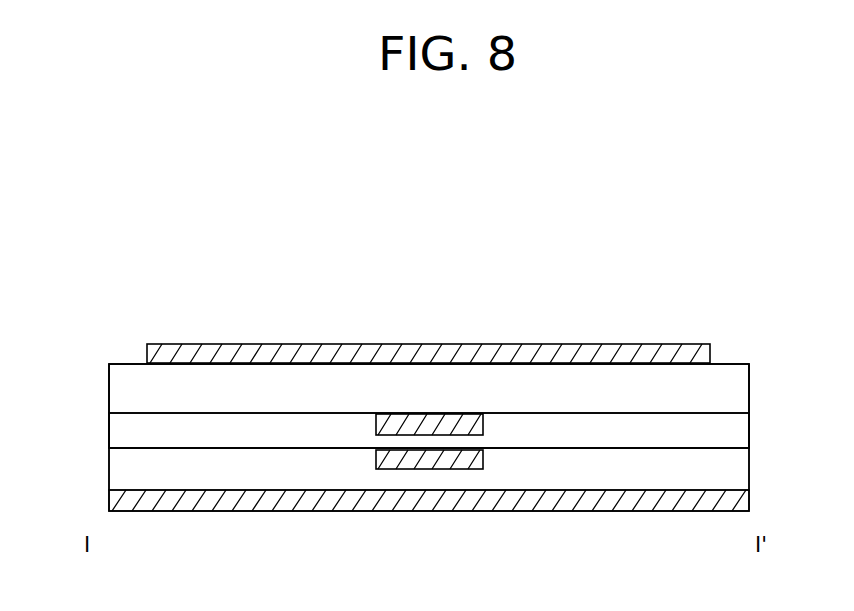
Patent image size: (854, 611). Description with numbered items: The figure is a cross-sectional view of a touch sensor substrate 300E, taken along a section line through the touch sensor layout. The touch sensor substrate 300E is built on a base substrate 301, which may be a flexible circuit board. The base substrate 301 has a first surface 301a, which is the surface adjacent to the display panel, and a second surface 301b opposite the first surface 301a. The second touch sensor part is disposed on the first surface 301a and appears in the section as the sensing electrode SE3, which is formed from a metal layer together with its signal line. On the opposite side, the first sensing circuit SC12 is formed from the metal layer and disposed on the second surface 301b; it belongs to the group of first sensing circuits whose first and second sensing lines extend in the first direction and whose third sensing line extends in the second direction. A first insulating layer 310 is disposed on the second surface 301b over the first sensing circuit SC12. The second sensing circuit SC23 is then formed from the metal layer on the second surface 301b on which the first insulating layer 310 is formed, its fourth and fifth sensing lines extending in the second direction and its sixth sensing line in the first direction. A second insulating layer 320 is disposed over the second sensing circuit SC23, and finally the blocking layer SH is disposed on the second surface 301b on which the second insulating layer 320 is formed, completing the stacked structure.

The touch sensor substrate 300E is at (508, 282).
The base substrate 301 is at (113, 384).
The first surface 301a is at (128, 363).
The second surface 301b is at (113, 430).
The first insulating layer 310 is at (745, 431).
The second insulating layer 320 is at (745, 466).
The blocking layer SH is at (575, 500).
The sensing electrode SE3 is at (578, 344).
The first sensing circuit SC12 is at (428, 422).
The second sensing circuit SC23 is at (378, 461).